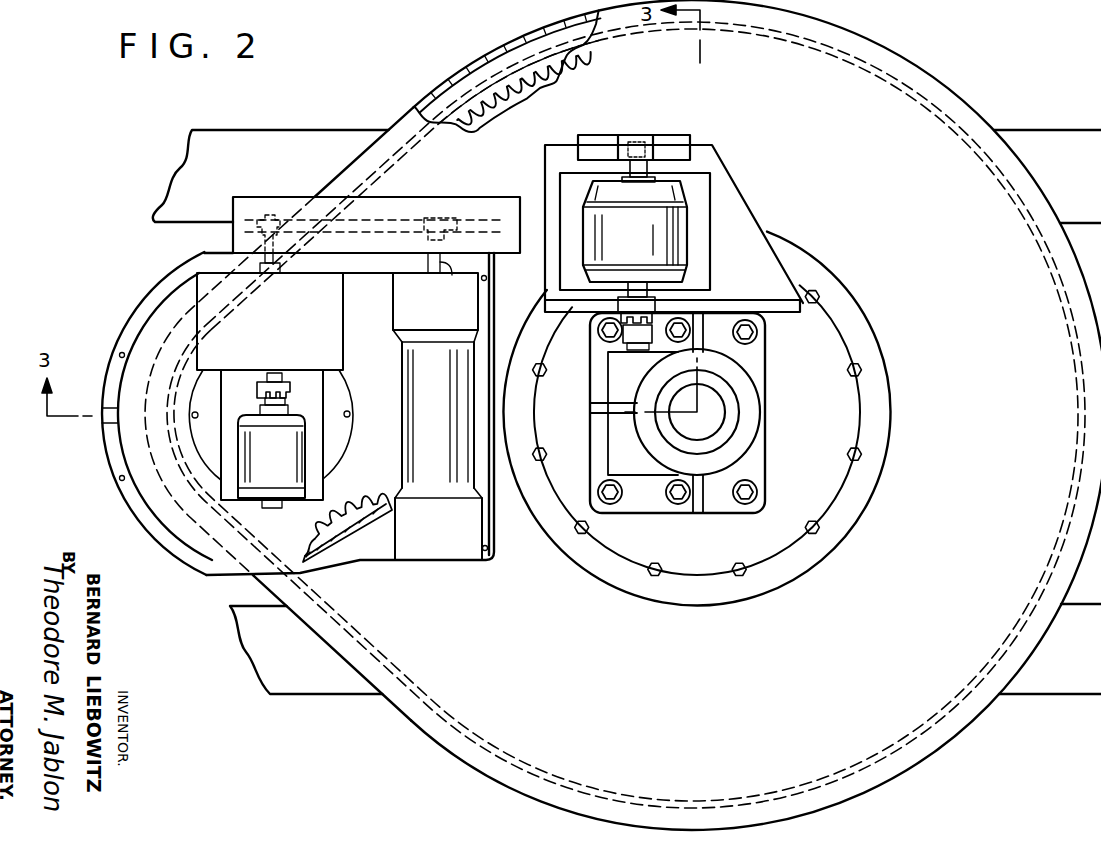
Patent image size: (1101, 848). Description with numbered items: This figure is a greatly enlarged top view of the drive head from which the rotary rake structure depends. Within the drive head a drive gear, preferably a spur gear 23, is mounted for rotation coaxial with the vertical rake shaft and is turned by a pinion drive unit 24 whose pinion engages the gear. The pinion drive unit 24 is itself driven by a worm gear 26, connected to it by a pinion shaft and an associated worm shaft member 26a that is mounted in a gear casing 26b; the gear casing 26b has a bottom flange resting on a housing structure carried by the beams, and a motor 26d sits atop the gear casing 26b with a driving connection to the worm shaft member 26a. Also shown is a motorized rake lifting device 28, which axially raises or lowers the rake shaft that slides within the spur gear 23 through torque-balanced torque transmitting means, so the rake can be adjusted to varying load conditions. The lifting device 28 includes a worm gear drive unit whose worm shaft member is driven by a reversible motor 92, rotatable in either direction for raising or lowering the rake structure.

The spur gear 23 is at (500, 107).
The pinion drive unit 24 is at (181, 568).
The worm gear 26 is at (347, 510).
The worm shaft member 26a is at (432, 240).
The gear casing 26b is at (152, 328).
The motor 26d is at (271, 439).
The rake lifting device 28 is at (776, 422).
The reversible motor 92 is at (674, 242).